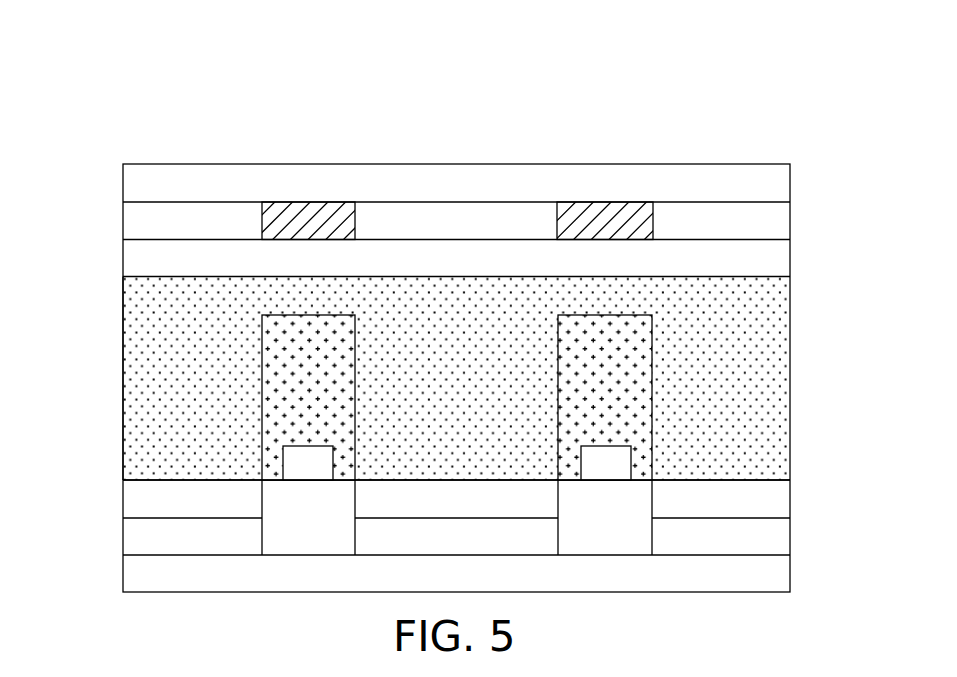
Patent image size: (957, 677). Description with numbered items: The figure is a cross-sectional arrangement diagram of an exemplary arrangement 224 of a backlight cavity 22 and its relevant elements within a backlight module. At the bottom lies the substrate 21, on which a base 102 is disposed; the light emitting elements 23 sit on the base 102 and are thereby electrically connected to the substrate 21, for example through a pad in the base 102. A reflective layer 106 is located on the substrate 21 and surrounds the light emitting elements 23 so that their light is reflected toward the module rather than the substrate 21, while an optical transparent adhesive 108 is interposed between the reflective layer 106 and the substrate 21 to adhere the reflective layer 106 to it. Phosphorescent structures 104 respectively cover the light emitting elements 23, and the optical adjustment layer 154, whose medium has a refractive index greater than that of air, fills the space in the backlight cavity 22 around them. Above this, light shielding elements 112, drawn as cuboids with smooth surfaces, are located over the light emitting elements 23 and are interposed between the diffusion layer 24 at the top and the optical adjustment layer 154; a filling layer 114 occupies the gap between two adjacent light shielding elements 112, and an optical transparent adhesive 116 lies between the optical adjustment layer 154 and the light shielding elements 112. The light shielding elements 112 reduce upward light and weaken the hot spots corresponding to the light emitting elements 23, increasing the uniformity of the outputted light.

The arrangement 224 is at (82, 128).
The diffusion layer 24 is at (776, 187).
The filling layer 114 is at (776, 222).
The light shielding elements 112 is at (277, 224).
The optical transparent adhesive 116 is at (776, 261).
The optical adjustment layer 154 is at (776, 346).
The backlight cavity 22 is at (116, 377).
The phosphorescent structures 104 is at (273, 416).
The light emitting elements 23 is at (617, 464).
The reflective layer 106 is at (776, 504).
The optical transparent adhesive 108 is at (776, 541).
The substrate 21 is at (776, 580).
The base 102 is at (280, 541).